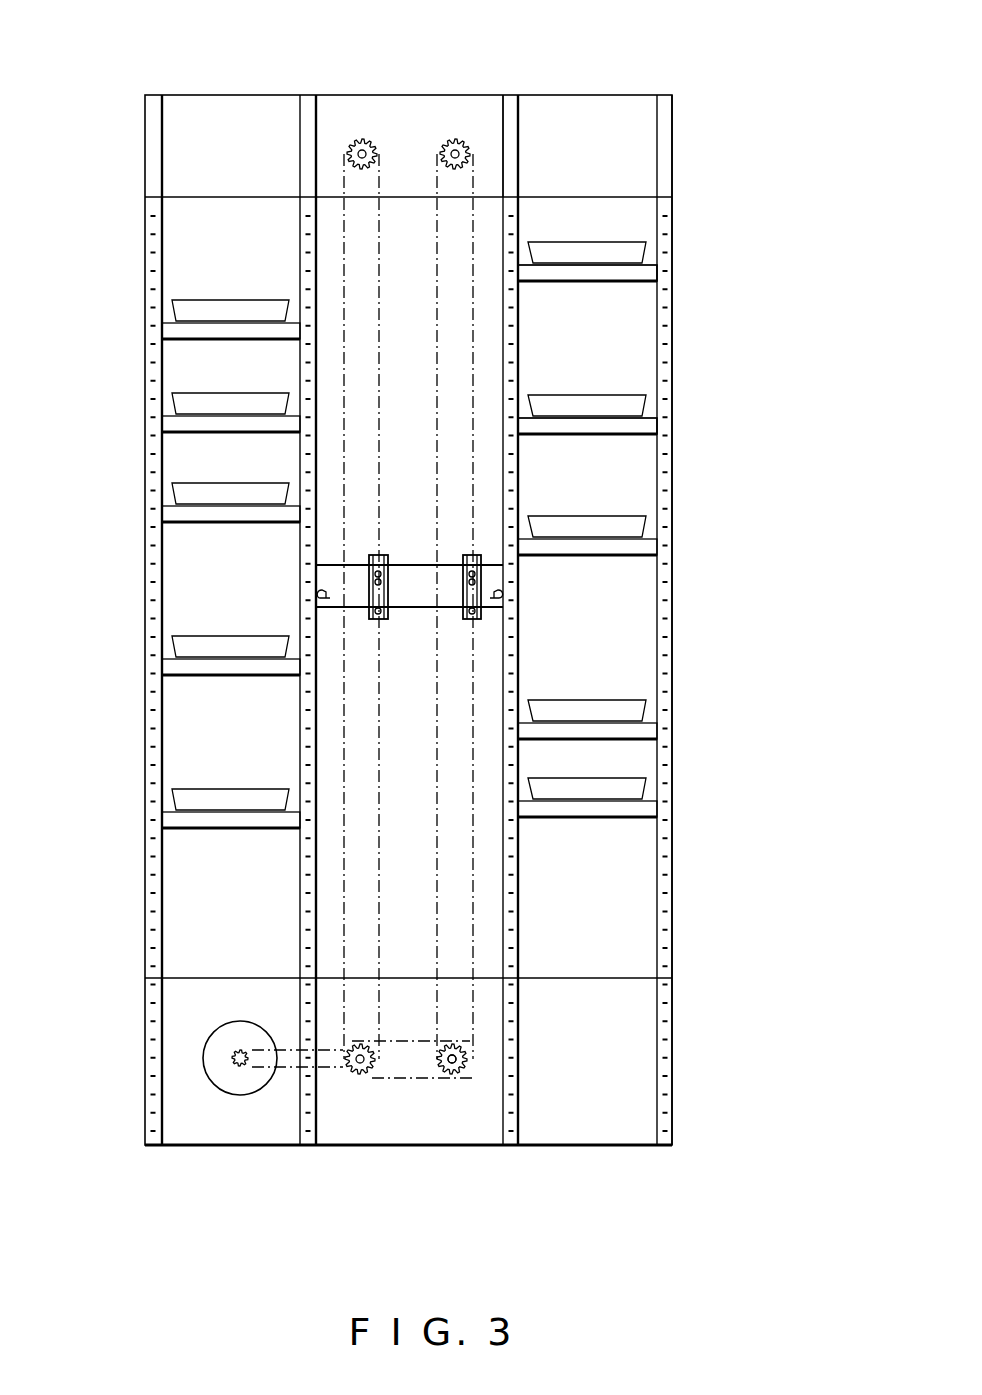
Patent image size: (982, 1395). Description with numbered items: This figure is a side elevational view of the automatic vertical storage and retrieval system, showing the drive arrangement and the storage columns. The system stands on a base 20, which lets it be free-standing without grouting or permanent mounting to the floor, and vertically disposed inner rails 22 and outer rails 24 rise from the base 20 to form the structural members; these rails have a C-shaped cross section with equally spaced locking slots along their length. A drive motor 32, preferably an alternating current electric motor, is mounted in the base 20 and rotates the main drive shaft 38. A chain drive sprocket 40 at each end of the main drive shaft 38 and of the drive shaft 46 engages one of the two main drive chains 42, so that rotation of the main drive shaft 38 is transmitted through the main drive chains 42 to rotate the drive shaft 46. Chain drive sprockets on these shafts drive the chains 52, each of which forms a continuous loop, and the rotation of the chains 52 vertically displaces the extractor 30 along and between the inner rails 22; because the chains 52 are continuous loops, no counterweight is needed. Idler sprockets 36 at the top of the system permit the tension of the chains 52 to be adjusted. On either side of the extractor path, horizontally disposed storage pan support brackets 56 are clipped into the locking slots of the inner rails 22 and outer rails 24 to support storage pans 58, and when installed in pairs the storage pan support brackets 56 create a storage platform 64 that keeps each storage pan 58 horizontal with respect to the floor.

The base 20 is at (633, 1040).
The inner rails 22 is at (512, 104).
The outer rails 24 is at (665, 191).
The extractor 30 is at (518, 617).
The drive motor 32 is at (227, 1078).
The idler sprockets 36 is at (457, 138).
The main drive shaft 38 is at (360, 1076).
The chain drive sprocket 40 is at (460, 1076).
The main drive chains 42 is at (400, 1078).
The drive shaft 46 is at (452, 1077).
The chains 52 is at (477, 178).
The storage pan support brackets 56 is at (647, 425).
The storage pans 58 is at (605, 248).
The storage platform 64 is at (207, 761).